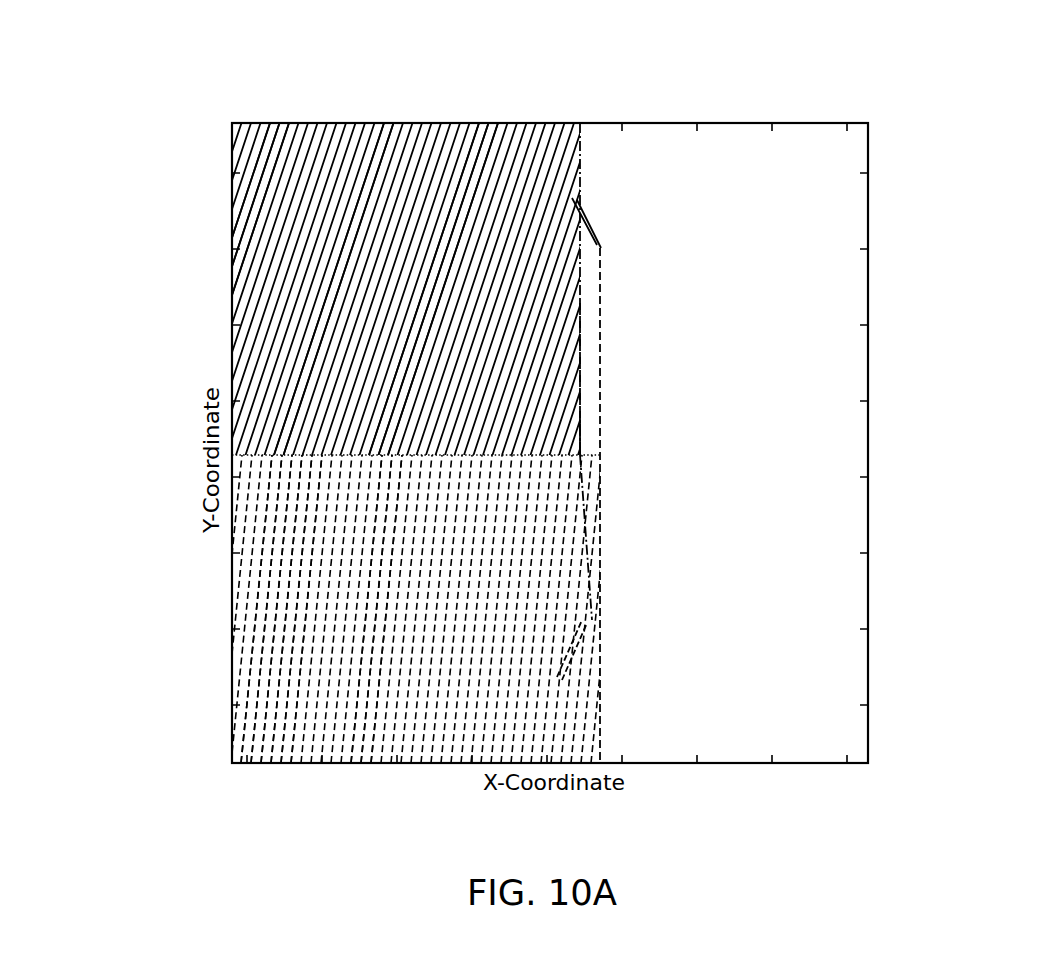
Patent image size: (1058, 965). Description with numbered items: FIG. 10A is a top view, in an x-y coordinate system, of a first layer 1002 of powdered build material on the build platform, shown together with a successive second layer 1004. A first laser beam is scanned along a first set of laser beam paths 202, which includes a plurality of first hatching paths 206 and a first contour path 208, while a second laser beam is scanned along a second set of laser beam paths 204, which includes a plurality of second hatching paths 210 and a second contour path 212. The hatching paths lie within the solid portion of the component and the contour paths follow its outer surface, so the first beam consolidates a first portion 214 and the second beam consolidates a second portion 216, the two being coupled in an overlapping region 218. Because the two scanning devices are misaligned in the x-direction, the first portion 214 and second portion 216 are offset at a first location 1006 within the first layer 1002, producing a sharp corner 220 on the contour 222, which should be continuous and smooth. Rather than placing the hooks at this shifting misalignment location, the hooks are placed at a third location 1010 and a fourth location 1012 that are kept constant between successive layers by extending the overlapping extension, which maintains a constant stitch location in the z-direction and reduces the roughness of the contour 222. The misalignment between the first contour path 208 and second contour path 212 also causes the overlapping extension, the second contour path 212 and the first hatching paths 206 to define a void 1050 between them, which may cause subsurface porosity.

The first set of laser beam paths 202 is at (261, 655).
The second set of laser beam paths 204 is at (416, 118).
The first hatching paths 206 is at (306, 718).
The first contour path 208 is at (583, 430).
The second hatching paths 210 is at (258, 141).
The second contour path 212 is at (590, 150).
The first portion 214 is at (286, 568).
The second portion 216 is at (305, 366).
The overlapping region 218 is at (292, 445).
The sharp corner 220 is at (600, 440).
The contour 222 is at (626, 700).
The first layer 1002 is at (383, 733).
The second layer 1004 is at (456, 174).
The first location 1006 is at (630, 458).
The third location 1010 is at (616, 218).
The fourth location 1012 is at (614, 660).
The void 1050 is at (593, 342).